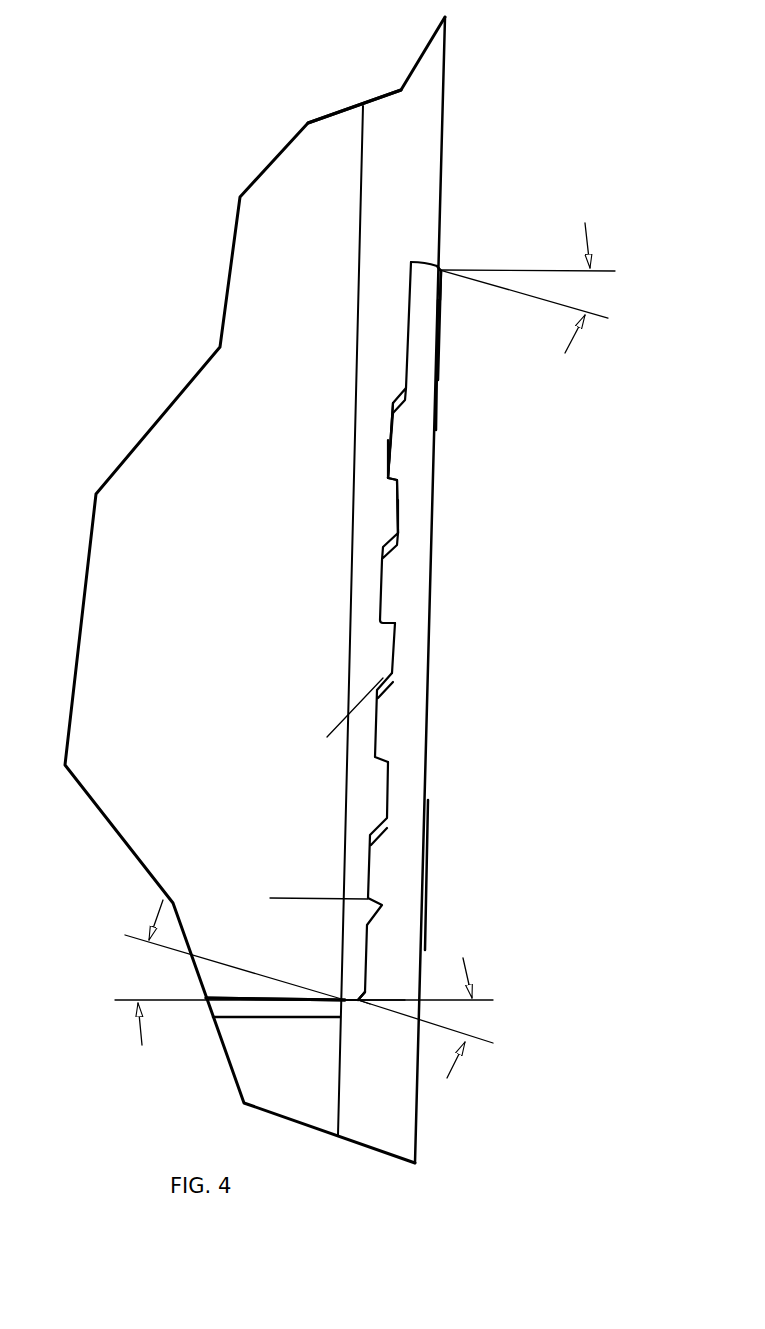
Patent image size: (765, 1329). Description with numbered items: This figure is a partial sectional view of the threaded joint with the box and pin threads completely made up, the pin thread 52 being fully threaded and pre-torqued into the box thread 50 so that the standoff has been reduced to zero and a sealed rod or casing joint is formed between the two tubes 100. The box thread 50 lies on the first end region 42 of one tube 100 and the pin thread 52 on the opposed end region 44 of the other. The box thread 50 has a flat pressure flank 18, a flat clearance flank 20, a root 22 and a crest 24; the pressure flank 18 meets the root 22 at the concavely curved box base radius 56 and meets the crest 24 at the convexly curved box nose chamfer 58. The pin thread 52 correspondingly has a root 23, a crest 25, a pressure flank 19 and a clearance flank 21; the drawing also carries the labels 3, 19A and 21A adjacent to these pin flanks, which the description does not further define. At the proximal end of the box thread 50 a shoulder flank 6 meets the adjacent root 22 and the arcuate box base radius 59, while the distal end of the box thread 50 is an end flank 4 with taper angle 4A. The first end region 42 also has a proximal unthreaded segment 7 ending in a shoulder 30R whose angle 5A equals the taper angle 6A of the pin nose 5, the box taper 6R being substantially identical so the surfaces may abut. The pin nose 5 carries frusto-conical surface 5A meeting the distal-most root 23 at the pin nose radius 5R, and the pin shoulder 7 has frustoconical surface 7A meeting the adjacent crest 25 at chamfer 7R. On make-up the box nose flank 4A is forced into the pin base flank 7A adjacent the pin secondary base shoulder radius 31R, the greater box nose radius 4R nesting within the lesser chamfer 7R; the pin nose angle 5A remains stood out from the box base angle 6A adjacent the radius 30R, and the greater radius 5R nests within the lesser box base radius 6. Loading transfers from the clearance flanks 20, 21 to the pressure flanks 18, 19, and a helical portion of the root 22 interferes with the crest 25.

The tube 100 is at (367, 1148).
The rake face 3 is at (425, 163).
The end flank 4 is at (441, 273).
The taper angle of end flank 4A is at (524, 294).
The box nose radius 4R is at (430, 282).
The nose 5 is at (340, 997).
The frusto-conical surface of pin nose 5A is at (236, 972).
The pin nose radius 5R is at (359, 997).
The shoulder flank 6 is at (391, 995).
The taper angle of pin nose 6A is at (425, 1018).
The box taper angle 6R is at (362, 1002).
The unthreaded segment 7 is at (411, 262).
The frustoconical surface of shoulder 7A is at (531, 288).
The chamfer 7R is at (408, 252).
The pressure flank 18 is at (399, 470).
The pressure flank 19 is at (389, 484).
The step angle 19A is at (370, 808).
The clearance flank 20 is at (408, 406).
The clearance flank 21 is at (392, 401).
The chamfer angle 21A is at (375, 755).
The root 22 is at (409, 518).
The root 23 is at (380, 448).
The crest 24 is at (398, 450).
The crest 25 is at (394, 515).
The shoulder 30R is at (358, 1002).
The pin secondary base shoulder radius 31R is at (433, 261).
The first end region 42 is at (428, 880).
The opposed end region 44 is at (361, 147).
The box thread 50 is at (438, 367).
The pin thread 52 is at (370, 327).
The box base radius 56 is at (375, 616).
The box nose chamfer 58 is at (382, 628).
The box base radius 59 is at (372, 1003).